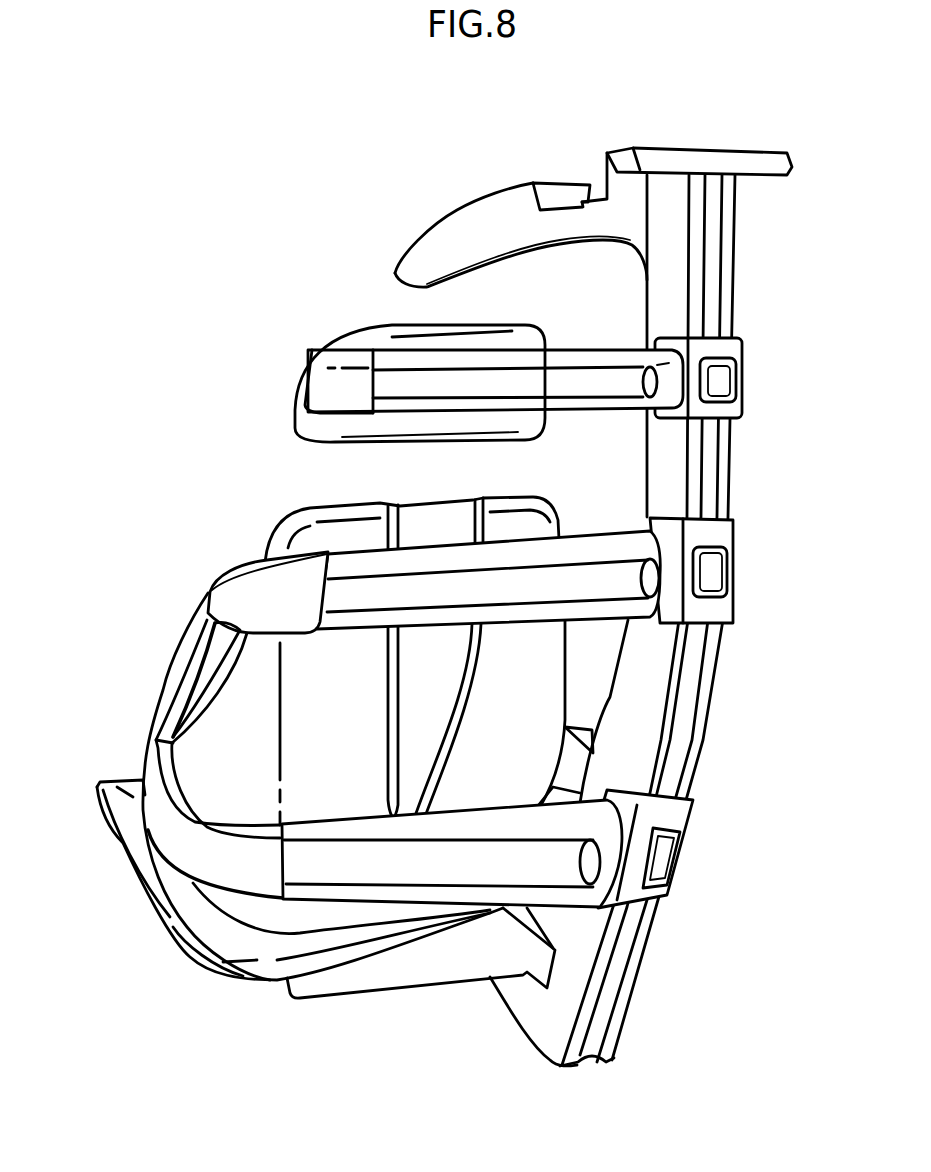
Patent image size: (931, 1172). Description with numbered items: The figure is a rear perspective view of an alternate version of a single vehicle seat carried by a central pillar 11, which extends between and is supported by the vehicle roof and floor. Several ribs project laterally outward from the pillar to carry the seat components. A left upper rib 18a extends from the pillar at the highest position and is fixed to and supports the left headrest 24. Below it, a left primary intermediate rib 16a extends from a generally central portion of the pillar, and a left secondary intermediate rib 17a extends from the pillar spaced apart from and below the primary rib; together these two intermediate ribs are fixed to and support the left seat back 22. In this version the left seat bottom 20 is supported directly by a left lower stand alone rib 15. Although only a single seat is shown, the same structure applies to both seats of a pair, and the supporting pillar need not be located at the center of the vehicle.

The central pillar 11 is at (585, 937).
The left lower stand alone rib 15 is at (433, 966).
The left primary intermediate rib 16a is at (622, 578).
The left secondary intermediate rib 17a is at (557, 863).
The left upper rib 18a is at (598, 383).
The left seat bottom 20 is at (208, 940).
The left seat back 22 is at (290, 680).
The left headrest 24 is at (325, 427).